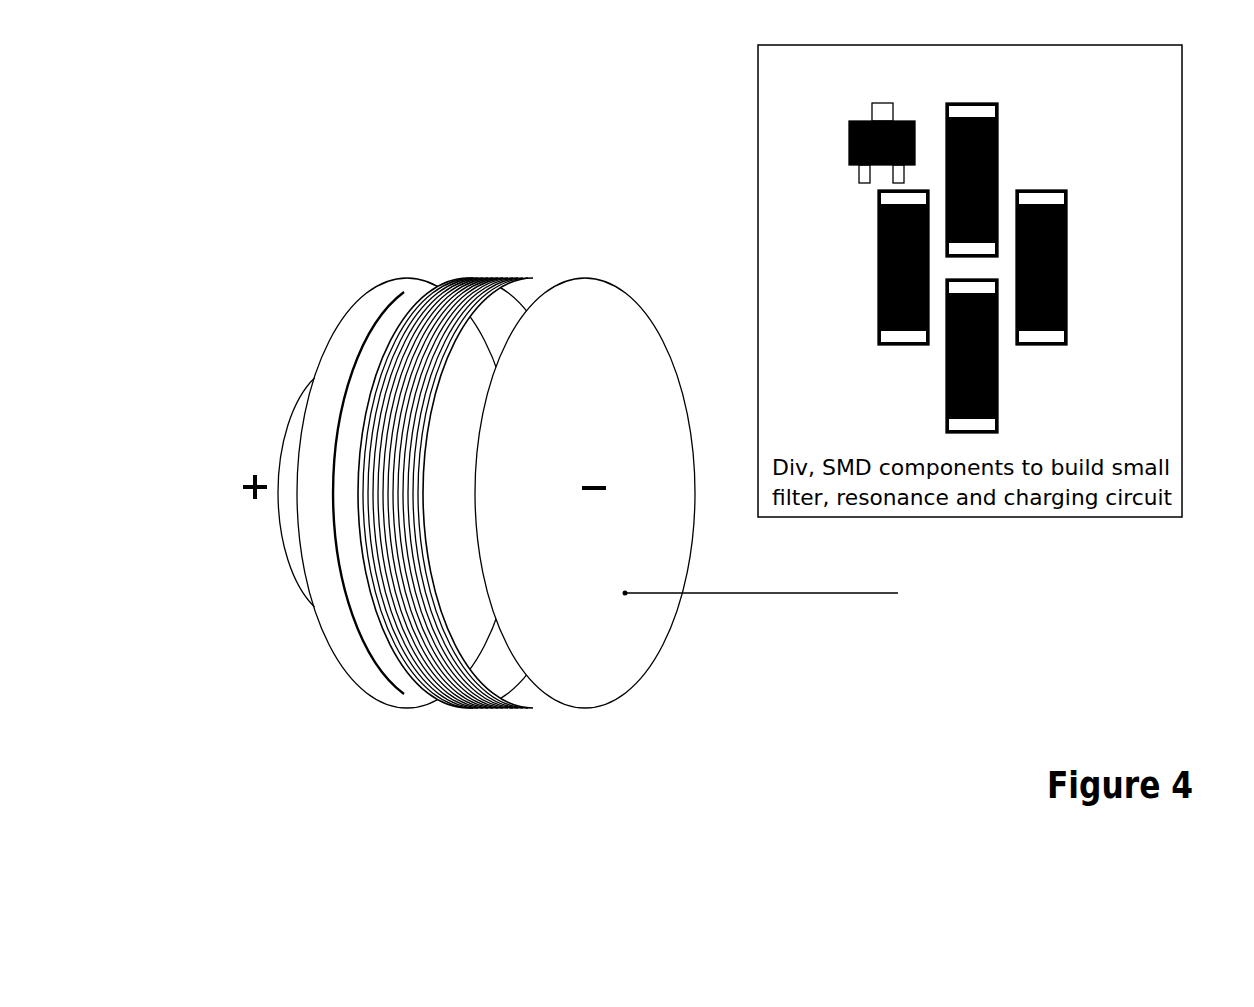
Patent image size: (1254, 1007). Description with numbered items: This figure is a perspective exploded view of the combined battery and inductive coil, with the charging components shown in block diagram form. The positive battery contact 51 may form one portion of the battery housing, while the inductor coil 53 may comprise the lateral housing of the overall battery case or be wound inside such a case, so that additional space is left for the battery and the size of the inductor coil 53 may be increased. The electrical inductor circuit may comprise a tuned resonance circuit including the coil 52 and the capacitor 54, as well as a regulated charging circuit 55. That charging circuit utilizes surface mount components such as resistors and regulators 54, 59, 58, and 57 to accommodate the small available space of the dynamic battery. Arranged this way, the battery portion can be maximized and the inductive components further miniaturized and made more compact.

The positive battery contact 51 is at (346, 640).
The coil 52 is at (464, 706).
The inductor coil 53 is at (632, 690).
The capacitor 54 is at (1067, 207).
The regulated charging circuit 55 is at (850, 137).
The surface mount component 57 is at (998, 403).
The surface mount component 58 is at (878, 318).
The surface mount component 59 is at (998, 130).